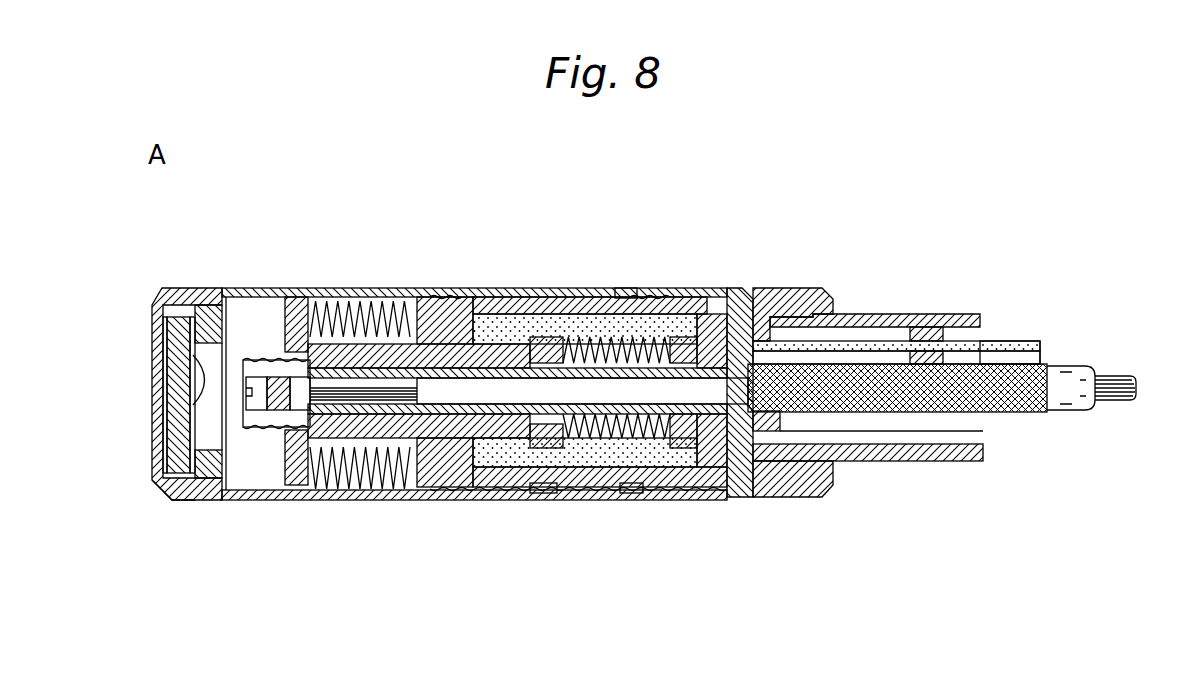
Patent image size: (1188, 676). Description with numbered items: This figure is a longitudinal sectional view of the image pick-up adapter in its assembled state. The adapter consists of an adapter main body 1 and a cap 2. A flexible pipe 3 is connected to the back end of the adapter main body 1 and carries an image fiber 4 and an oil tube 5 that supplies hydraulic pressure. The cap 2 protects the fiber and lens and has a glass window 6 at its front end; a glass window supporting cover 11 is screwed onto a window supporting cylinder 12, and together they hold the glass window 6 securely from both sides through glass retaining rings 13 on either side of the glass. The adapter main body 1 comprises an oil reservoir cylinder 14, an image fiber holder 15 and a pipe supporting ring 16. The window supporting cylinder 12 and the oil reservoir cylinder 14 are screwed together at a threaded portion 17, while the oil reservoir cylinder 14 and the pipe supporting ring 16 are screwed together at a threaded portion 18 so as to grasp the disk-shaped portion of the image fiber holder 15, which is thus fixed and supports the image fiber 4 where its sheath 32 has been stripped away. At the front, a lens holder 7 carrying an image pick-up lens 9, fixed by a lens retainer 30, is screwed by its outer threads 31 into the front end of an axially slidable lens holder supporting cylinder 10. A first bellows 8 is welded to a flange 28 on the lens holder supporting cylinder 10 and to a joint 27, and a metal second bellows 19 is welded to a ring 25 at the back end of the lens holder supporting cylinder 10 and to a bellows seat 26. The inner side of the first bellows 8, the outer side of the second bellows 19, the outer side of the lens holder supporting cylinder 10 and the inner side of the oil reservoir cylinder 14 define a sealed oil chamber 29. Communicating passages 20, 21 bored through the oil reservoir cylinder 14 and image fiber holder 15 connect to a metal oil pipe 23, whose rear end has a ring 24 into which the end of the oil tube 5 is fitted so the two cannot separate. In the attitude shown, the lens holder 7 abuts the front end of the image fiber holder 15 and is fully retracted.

The adapter main body 1 is at (785, 220).
The cap 2 is at (222, 221).
The flexible pipe 3 is at (968, 327).
The image fiber 4 is at (1057, 413).
The oil tube 5 is at (1010, 341).
The glass window 6 is at (170, 381).
The lens holder 7 is at (300, 486).
The first bellows 8 is at (332, 288).
The image pick-up lens 9 is at (270, 428).
The lens holder supporting cylinder 10 is at (368, 486).
The glass window supporting cover 11 is at (165, 289).
The window supporting cylinder 12 is at (215, 289).
The glass retaining rings 13 is at (163, 344).
The oil reservoir cylinder 14 is at (590, 287).
The image fiber holder 15 is at (441, 288).
The pipe supporting ring 16 is at (780, 284).
The threaded portion 17 is at (503, 488).
The threaded portion 18 is at (668, 490).
The second bellows 19 is at (613, 440).
The communicating passage 20 is at (685, 288).
The communicating passage 21 is at (760, 282).
The oil pipe 23 is at (872, 314).
The ring 24 is at (927, 341).
The ring 25 is at (523, 488).
The bellows seat 26 is at (757, 455).
The joint 27 is at (433, 487).
The flange 28 is at (318, 489).
The oil chamber 29 is at (382, 300).
The lens retainer 30 is at (192, 500).
The threads 31 is at (280, 428).
The sheath 32 is at (1025, 413).